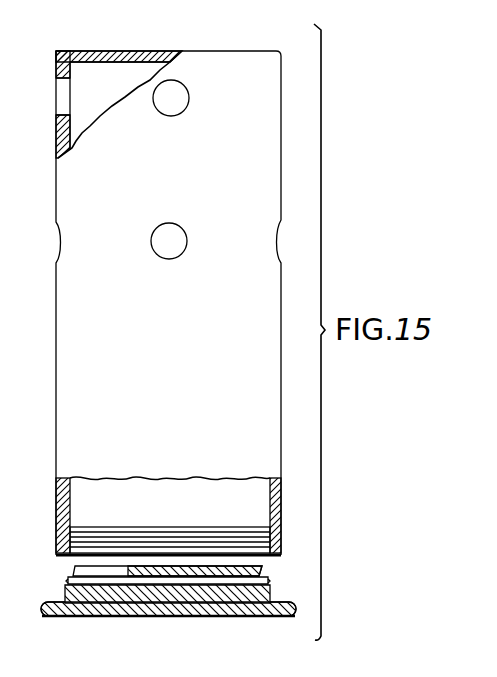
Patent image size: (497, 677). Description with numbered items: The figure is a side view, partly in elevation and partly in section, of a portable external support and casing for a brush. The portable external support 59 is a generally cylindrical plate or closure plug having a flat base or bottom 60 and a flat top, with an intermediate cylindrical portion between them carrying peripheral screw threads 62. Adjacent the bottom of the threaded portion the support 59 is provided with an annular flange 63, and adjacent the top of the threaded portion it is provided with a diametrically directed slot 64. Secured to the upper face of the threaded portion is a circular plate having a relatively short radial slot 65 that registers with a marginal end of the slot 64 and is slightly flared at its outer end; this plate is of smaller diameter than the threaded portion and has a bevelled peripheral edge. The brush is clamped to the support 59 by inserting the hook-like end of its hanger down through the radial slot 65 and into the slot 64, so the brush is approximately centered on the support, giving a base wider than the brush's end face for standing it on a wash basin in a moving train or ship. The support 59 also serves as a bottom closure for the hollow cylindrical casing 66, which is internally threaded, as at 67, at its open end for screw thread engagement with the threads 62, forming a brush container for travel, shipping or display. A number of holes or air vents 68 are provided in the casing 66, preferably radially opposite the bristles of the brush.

The portable external support 59 is at (165, 606).
The flat base or bottom 60 is at (235, 614).
The peripheral screw threads 62 is at (55, 606).
The annular flange 63 is at (288, 612).
The diametrically directed slot 64 is at (258, 582).
The radial slot 65 is at (80, 571).
The hollow cylindrical casing 66 is at (175, 52).
The internal threads 67 is at (68, 523).
The holes or air vents 68 is at (190, 98).